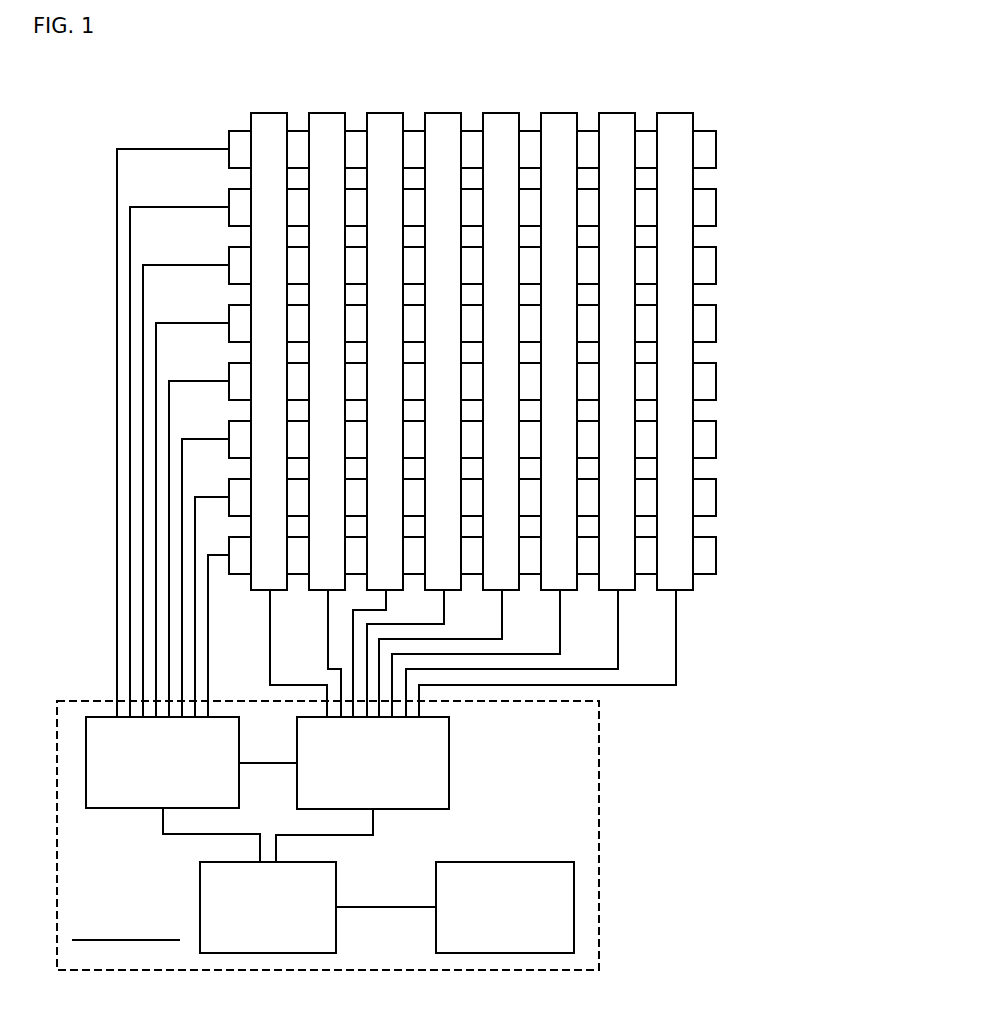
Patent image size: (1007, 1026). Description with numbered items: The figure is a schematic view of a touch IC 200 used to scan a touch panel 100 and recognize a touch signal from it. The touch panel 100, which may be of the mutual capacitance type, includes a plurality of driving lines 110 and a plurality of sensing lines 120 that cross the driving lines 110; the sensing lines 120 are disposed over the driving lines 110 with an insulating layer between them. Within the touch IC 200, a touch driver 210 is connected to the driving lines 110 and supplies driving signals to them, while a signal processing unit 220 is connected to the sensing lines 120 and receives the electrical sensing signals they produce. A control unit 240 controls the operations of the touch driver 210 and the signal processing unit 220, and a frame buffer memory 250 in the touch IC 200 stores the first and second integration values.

The touch panel 100 is at (483, 415).
The driving lines 110 is at (709, 557).
The sensing lines 120 is at (687, 582).
The touch IC 200 is at (372, 835).
The touch driver 210 is at (122, 808).
The signal processing unit 220 is at (449, 761).
The control unit 240 is at (336, 927).
The frame buffer memory 250 is at (574, 906).